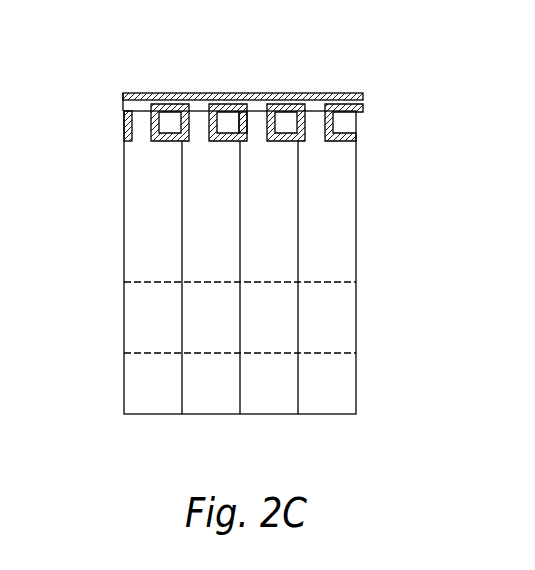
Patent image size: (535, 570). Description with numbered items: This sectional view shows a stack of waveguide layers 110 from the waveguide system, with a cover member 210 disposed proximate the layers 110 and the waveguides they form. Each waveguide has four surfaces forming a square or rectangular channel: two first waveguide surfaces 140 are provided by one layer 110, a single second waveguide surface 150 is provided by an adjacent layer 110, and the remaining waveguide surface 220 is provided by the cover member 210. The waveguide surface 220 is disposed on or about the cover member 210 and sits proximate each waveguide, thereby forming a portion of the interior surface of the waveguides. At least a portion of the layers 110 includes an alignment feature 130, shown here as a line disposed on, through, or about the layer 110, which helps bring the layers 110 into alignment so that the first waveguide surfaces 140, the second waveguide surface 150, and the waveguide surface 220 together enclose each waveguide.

The layers 110 is at (334, 242).
The alignment feature 130 is at (337, 352).
The first waveguide surface 140 is at (230, 143).
The second waveguide surface 150 is at (250, 128).
The cover member 210 is at (180, 93).
The waveguide surface 220 is at (152, 104).